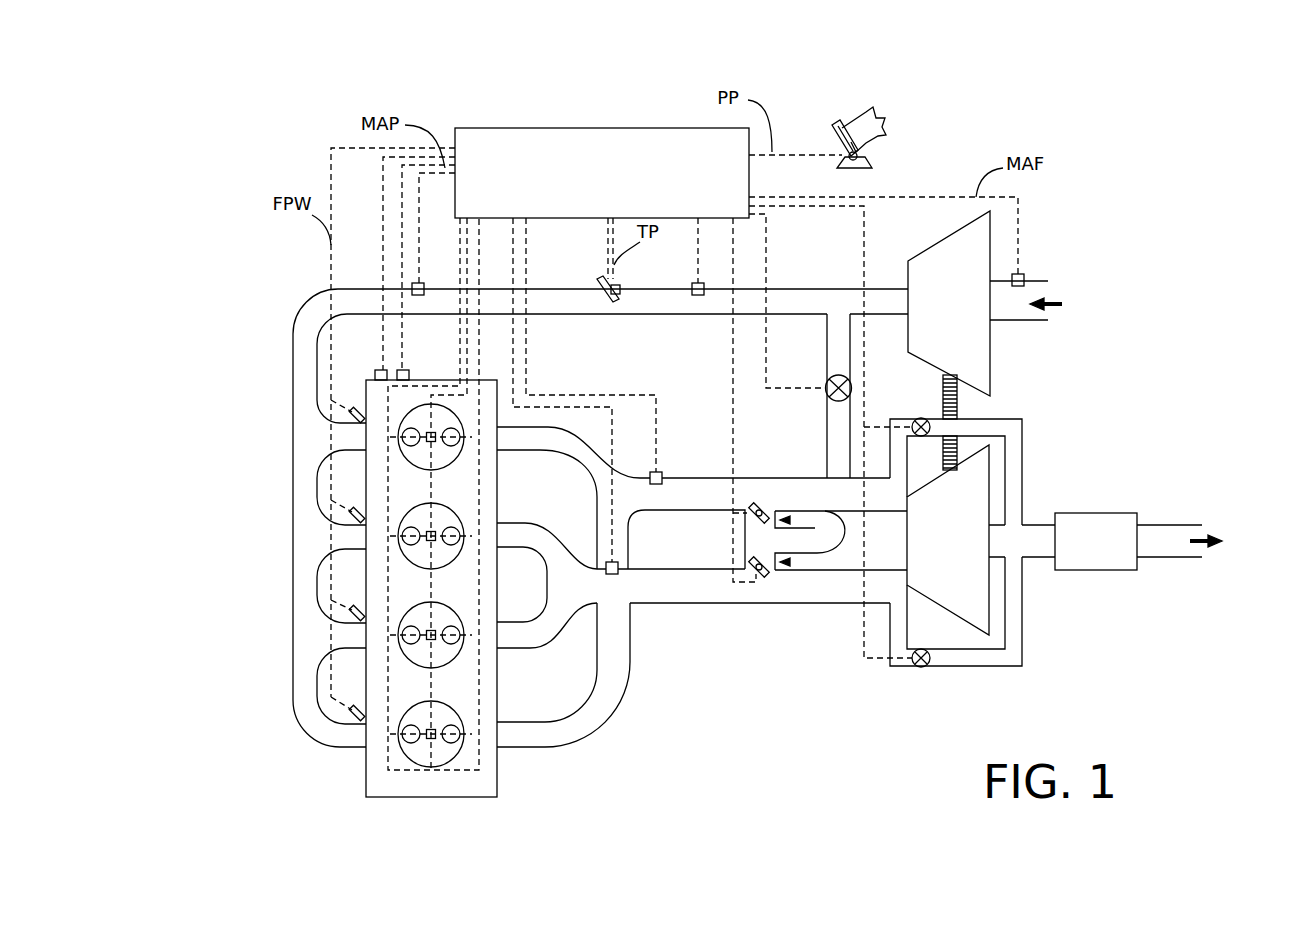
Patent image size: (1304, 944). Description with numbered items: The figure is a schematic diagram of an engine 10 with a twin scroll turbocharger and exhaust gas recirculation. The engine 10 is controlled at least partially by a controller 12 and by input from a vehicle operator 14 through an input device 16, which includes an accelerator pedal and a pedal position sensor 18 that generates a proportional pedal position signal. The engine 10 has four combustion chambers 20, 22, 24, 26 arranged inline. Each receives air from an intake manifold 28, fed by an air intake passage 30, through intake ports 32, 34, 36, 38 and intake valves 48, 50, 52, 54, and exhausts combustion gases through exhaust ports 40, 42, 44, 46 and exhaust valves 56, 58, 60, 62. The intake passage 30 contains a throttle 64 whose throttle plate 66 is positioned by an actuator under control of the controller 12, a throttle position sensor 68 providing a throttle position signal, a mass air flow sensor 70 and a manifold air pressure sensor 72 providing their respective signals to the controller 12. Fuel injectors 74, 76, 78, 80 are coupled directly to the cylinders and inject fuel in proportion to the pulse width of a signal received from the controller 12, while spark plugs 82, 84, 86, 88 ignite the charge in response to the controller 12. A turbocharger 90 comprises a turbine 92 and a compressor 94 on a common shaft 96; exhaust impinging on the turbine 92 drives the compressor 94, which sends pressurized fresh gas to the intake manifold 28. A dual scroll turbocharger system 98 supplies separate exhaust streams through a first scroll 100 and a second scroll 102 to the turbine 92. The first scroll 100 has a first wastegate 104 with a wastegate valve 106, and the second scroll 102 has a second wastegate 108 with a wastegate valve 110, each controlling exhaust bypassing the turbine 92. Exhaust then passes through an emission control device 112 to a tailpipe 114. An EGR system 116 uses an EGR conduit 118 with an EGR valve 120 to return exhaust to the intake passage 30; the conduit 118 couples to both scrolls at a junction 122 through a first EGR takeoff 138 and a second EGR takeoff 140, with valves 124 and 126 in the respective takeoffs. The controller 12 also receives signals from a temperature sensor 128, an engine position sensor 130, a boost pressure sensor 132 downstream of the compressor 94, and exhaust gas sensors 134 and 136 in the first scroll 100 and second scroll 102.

The engine 10 is at (200, 450).
The controller 12 is at (602, 173).
The vehicle operator 14 is at (879, 120).
The input device 16 is at (836, 132).
The pedal position sensor 18 is at (870, 152).
The combustion chamber 20 is at (452, 456).
The combustion chamber 22 is at (452, 554).
The combustion chamber 24 is at (452, 653).
The combustion chamber 26 is at (452, 752).
The intake manifold 28 is at (292, 336).
The air intake passage 30 is at (1061, 303).
The intake port 32 is at (330, 432).
The intake port 34 is at (330, 525).
The intake port 36 is at (330, 627).
The intake port 38 is at (332, 740).
The exhaust port 40 is at (500, 440).
The exhaust port 42 is at (500, 538).
The exhaust port 44 is at (500, 640).
The exhaust port 46 is at (500, 740).
The intake valve 48 is at (406, 429).
The intake valve 50 is at (406, 528).
The intake valve 52 is at (406, 627).
The intake valve 54 is at (406, 726).
The exhaust valve 56 is at (455, 429).
The exhaust valve 58 is at (455, 528).
The exhaust valve 60 is at (455, 627).
The exhaust valve 62 is at (455, 726).
The throttle 64 is at (603, 300).
The throttle plate 66 is at (618, 302).
The throttle position sensor 68 is at (619, 286).
The mass air flow sensor 70 is at (1025, 280).
The manifold air pressure sensor 72 is at (422, 284).
The fuel injector 74 is at (357, 410).
The fuel injector 76 is at (357, 510).
The fuel injector 78 is at (357, 610).
The fuel injector 80 is at (357, 710).
The spark plug 82 is at (404, 446).
The spark plug 84 is at (404, 545).
The spark plug 86 is at (404, 644).
The spark plug 88 is at (404, 743).
The turbocharger 90 is at (1052, 406).
The turbine 92 is at (956, 540).
The compressor 94 is at (978, 303).
The common shaft 96 is at (943, 395).
The dual scroll turbocharger system 98 is at (796, 700).
The first scroll 100 is at (732, 477).
The second scroll 102 is at (685, 604).
The first wastegate 104 is at (1023, 477).
The wastegate valve 106 is at (921, 436).
The second wastegate 108 is at (1023, 600).
The wastegate valve 110 is at (921, 667).
The emission control device 112 is at (1079, 541).
The tailpipe 114 is at (1199, 541).
The exhaust gas recirculation system 116 is at (774, 448).
The EGR conduit 118 is at (826, 476).
The EGR valve 120 is at (826, 386).
The junction 122 is at (712, 540).
The valve 124 is at (750, 504).
The valve 126 is at (766, 576).
The temperature sensor 128 is at (405, 369).
The engine position sensor 130 is at (381, 369).
The pressure sensor 132 is at (704, 285).
The exhaust gas sensor 134 is at (655, 472).
The exhaust gas sensor 136 is at (606, 563).
The first EGR takeoff 138 is at (786, 520).
The second EGR takeoff 140 is at (786, 562).